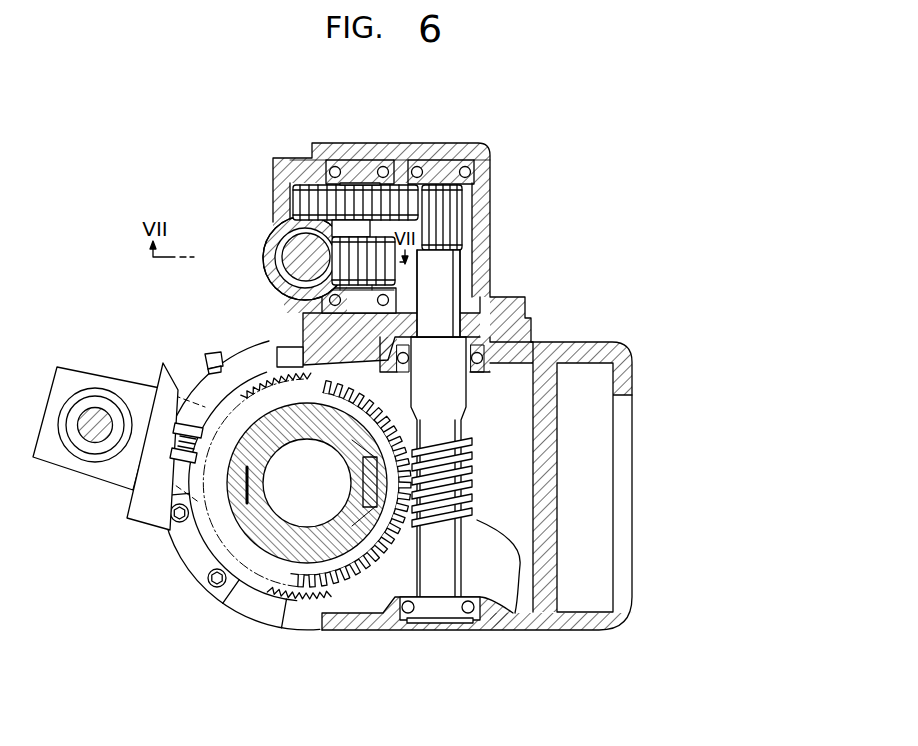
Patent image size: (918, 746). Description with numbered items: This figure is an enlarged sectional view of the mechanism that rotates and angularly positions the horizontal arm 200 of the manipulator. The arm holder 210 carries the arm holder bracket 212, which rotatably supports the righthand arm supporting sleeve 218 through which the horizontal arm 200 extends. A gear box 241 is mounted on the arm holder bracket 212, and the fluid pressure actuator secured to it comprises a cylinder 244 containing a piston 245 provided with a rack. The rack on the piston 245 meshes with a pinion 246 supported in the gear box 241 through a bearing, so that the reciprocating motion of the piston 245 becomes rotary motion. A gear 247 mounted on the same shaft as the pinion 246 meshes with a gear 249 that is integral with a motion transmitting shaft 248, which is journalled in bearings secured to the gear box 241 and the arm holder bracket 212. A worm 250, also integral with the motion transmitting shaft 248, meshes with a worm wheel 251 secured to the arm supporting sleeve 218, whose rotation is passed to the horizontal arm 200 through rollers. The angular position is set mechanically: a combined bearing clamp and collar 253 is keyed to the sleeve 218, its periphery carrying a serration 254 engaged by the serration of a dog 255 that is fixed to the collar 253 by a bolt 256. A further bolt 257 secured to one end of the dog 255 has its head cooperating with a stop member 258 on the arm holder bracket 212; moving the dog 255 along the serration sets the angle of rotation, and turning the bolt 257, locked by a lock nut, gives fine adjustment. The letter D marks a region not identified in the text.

The horizontal arm 200 is at (205, 568).
The arm holder 210 is at (565, 345).
The arm holder bracket 212 is at (375, 626).
The arm supporting sleeve 218 is at (307, 560).
The gear box 241 is at (492, 199).
The cylinder 244 is at (274, 278).
The piston 245 is at (297, 258).
The pinion 246 is at (278, 228).
The gear 247 is at (348, 190).
The motion transmitting shaft 248 is at (459, 273).
The gear 249 is at (433, 190).
The worm 250 is at (515, 615).
The worm wheel 251 is at (350, 577).
The combined bearing clamp and collar 253 is at (277, 580).
The serration 254 is at (283, 603).
The dog 255 is at (200, 405).
The bolt 256 is at (212, 358).
The bolt 257 is at (180, 462).
The stop member 258 is at (183, 556).
The dimension D is at (290, 300).